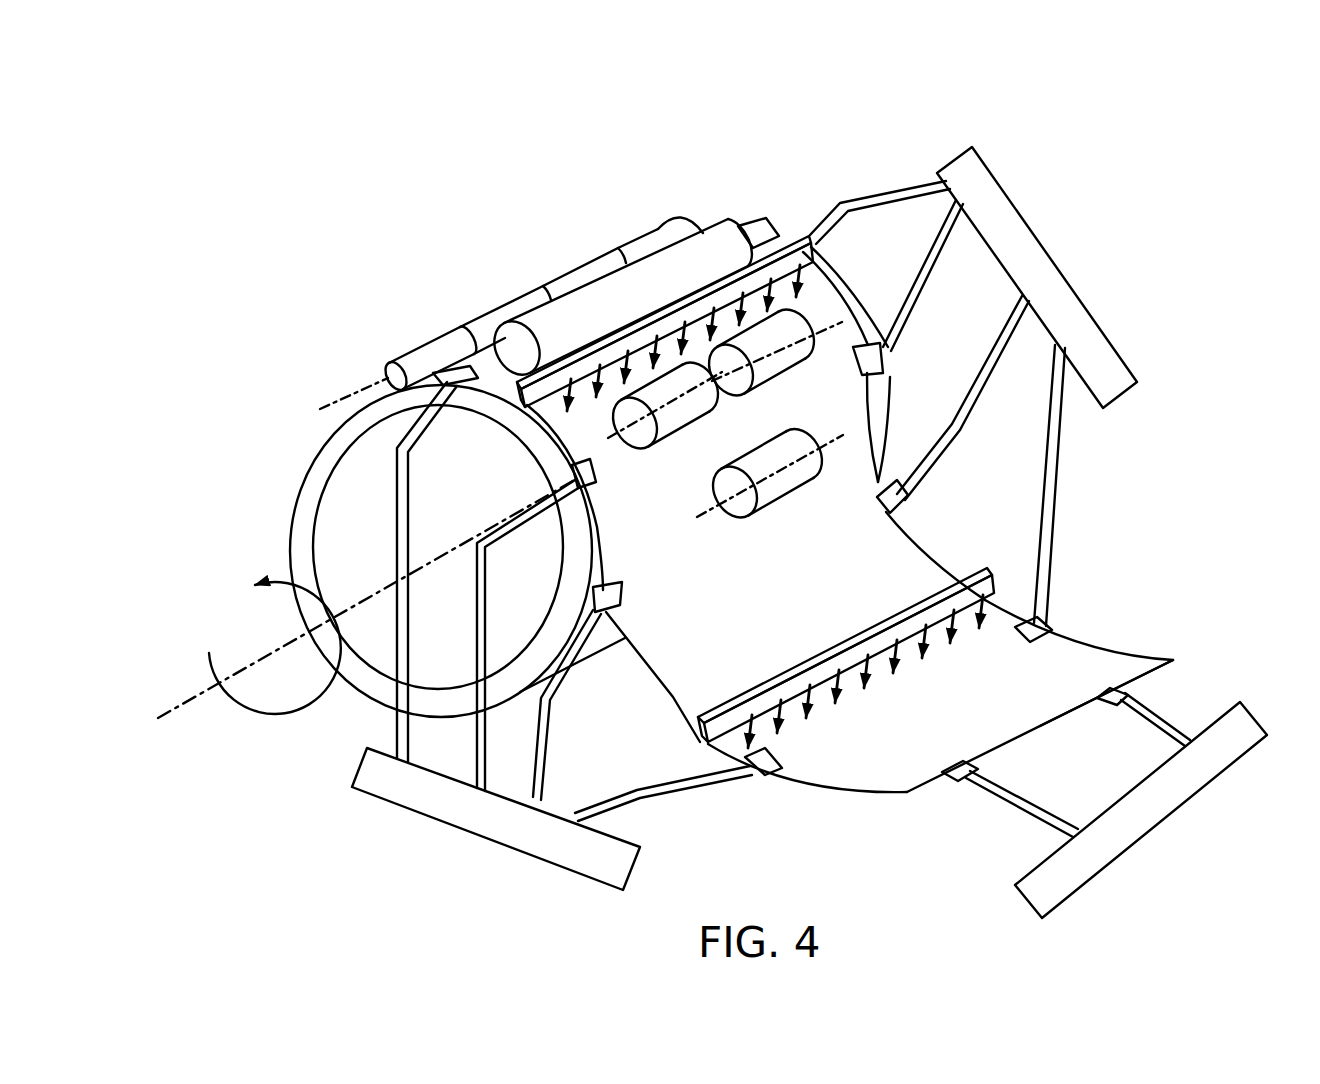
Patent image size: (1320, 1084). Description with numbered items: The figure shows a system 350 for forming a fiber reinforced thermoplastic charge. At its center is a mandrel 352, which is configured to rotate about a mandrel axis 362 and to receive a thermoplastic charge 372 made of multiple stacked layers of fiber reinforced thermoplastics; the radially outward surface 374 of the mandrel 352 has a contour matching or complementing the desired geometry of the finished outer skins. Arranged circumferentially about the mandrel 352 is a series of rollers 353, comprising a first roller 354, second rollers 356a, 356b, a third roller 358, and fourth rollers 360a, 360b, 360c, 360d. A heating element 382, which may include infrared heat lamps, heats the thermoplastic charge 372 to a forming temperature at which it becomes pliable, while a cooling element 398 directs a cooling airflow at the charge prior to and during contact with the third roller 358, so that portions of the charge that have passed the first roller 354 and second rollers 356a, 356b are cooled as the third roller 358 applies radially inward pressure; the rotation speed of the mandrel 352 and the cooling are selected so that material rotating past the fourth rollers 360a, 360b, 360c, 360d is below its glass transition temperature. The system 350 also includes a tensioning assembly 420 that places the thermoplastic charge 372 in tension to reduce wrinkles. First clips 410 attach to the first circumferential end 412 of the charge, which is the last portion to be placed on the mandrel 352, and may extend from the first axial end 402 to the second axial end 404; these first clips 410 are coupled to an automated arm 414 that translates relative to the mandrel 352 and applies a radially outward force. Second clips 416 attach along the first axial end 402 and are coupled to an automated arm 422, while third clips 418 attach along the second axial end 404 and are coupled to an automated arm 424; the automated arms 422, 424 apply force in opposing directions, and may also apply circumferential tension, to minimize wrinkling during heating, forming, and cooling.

The system 350 is at (268, 142).
The mandrel 352 is at (312, 458).
The series of rollers 353 is at (557, 230).
The first roller 354 is at (799, 482).
The second roller 356a is at (694, 410).
The second roller 356b is at (792, 365).
The third roller 358 is at (627, 287).
The fourth roller 360a is at (428, 352).
The fourth roller 360b is at (490, 323).
The fourth roller 360c is at (560, 287).
The fourth roller 360d is at (660, 240).
The mandrel axis 362 is at (173, 710).
The thermoplastic charge 372 is at (1111, 652).
The radially outward surface 374 is at (592, 632).
The heating element 382 is at (990, 572).
The cooling element 398 is at (806, 246).
The first axial end 402 is at (828, 790).
The second axial end 404 is at (1153, 657).
The first clips 410 is at (962, 780).
The first circumferential end 412 is at (1147, 677).
The automated arm 414 is at (1160, 798).
The second clips 416 is at (458, 388).
The third clips 418 is at (755, 225).
The tensioning assembly 420 is at (978, 346).
The automated arm 422 is at (482, 833).
The automated arm 424 is at (1063, 310).